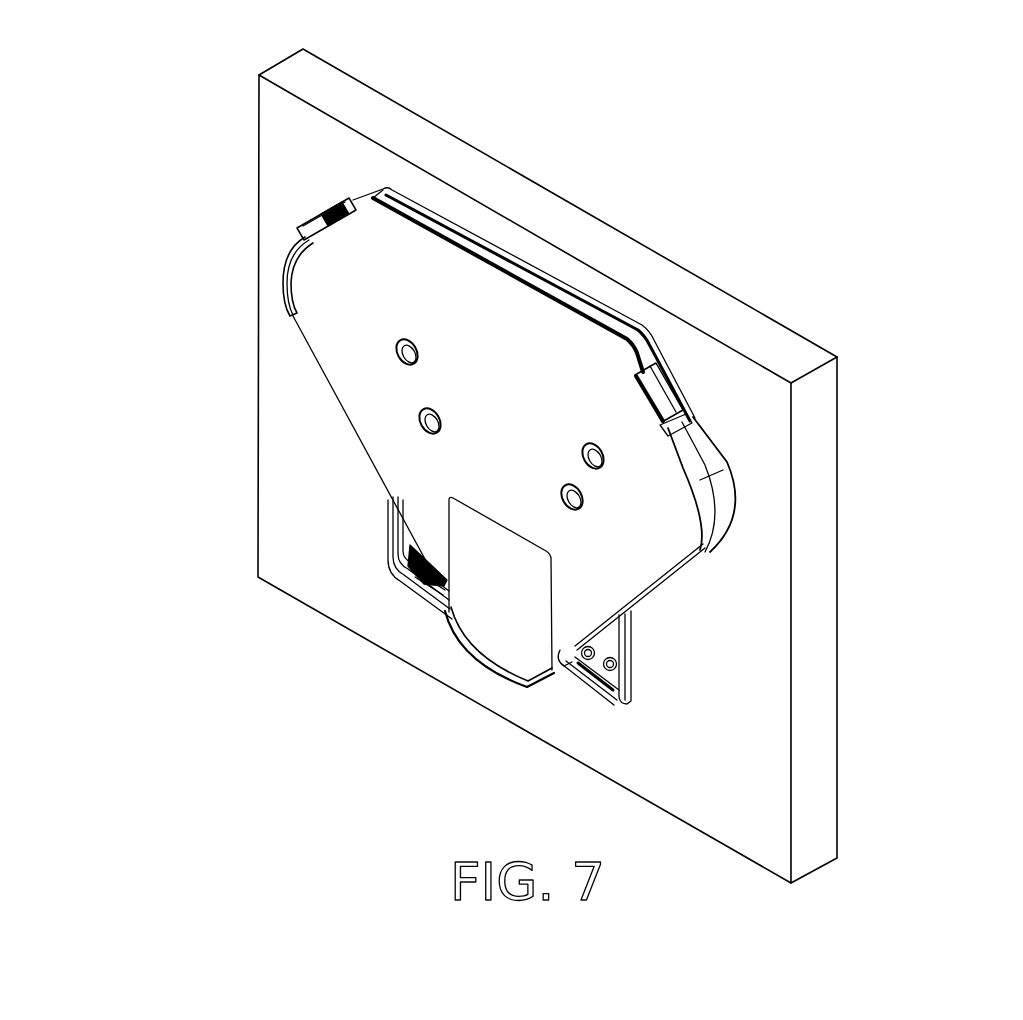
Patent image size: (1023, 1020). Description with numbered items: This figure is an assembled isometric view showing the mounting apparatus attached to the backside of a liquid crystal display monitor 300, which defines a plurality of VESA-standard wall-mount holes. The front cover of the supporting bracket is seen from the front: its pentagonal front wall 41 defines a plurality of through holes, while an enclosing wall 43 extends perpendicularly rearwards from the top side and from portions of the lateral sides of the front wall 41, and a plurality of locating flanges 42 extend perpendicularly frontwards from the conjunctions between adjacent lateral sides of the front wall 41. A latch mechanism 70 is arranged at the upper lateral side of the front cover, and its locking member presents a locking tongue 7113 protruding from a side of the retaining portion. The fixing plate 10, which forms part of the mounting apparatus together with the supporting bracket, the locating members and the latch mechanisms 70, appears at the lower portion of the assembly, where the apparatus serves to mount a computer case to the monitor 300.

The liquid crystal display (LCD) monitor 300 is at (812, 440).
The enclosing wall 43 is at (577, 302).
The locking tongue 7113 is at (353, 207).
The locating flanges 42 is at (282, 273).
The latch mechanisms 70 is at (673, 382).
The front wall 41 is at (603, 466).
The fixing plate 10 is at (620, 705).